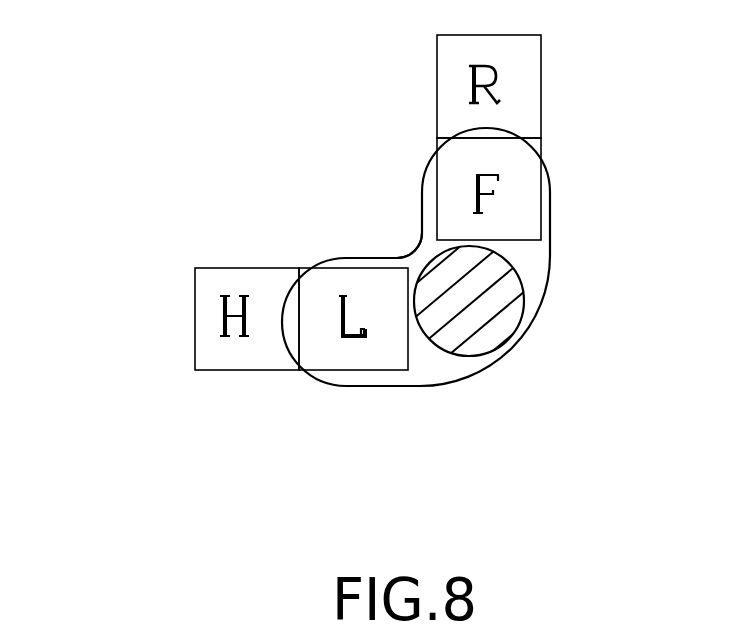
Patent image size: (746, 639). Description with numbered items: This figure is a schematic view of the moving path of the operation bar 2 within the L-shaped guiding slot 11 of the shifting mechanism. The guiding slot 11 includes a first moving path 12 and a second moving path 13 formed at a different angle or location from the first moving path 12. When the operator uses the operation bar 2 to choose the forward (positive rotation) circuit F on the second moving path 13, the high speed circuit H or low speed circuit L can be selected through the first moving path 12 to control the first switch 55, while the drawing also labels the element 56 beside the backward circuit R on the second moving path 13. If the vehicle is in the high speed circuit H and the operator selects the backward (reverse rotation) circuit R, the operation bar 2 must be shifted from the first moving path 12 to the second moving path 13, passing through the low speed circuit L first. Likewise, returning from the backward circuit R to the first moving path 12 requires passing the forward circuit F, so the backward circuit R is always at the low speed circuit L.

The operation bar 2 is at (518, 305).
The guiding slot 11 is at (392, 227).
The first moving path 12 is at (380, 374).
The second moving path 13 is at (543, 248).
The first switch 55 is at (212, 363).
The R key 56 is at (541, 108).